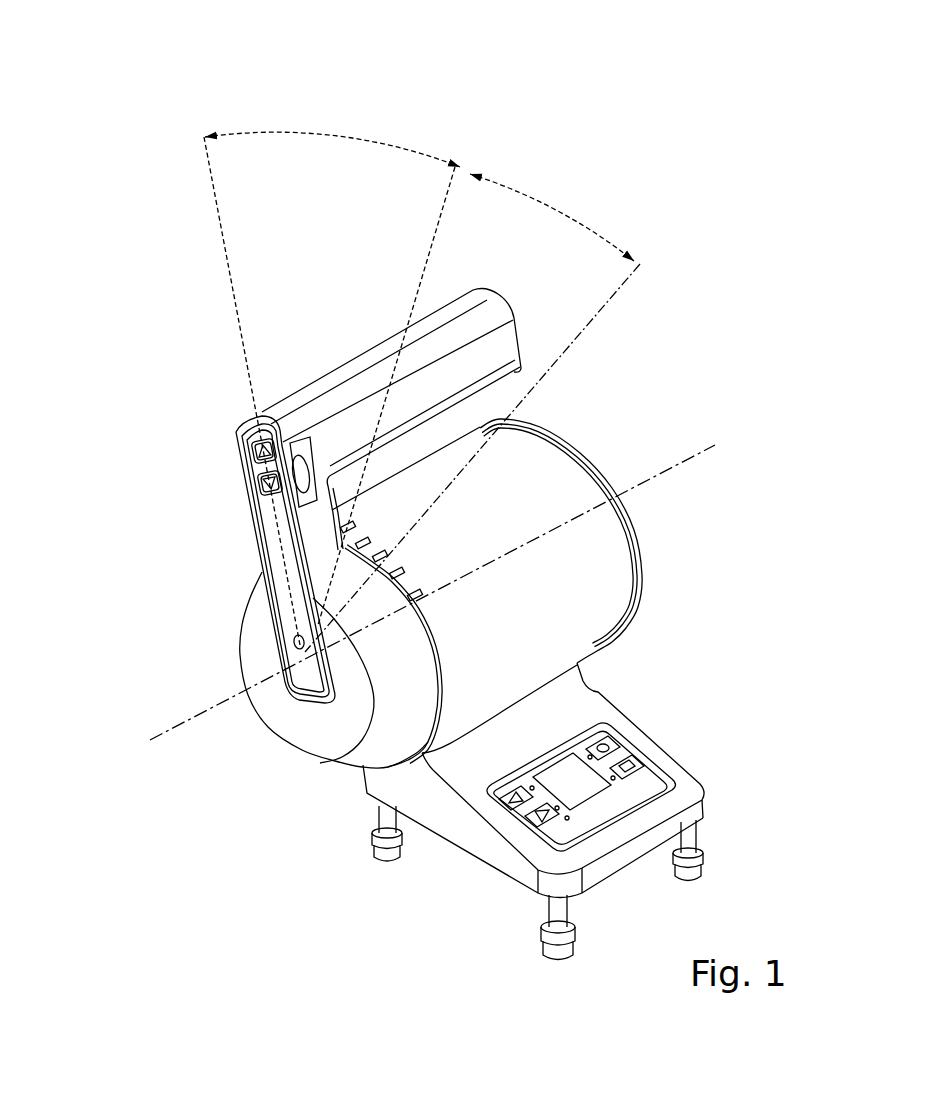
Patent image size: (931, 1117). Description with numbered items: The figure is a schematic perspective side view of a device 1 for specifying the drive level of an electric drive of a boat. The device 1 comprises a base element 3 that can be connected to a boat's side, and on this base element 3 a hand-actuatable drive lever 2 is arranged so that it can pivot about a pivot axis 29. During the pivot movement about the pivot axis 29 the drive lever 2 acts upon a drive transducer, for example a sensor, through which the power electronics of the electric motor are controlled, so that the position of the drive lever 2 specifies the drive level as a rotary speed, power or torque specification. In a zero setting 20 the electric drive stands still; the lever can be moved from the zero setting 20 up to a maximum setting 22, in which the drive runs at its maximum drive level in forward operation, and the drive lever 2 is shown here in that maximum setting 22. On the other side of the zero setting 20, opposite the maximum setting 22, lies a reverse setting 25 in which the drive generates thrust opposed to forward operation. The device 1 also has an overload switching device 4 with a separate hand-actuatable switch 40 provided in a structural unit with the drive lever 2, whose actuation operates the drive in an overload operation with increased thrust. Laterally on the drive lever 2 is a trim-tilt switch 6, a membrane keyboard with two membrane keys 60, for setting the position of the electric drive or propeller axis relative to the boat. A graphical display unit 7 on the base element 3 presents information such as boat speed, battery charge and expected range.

The device 1 is at (713, 97).
The drive lever 2 is at (502, 340).
The base element 3 is at (533, 475).
The overload switching device 4 is at (302, 437).
The trim-tilt switch 6 is at (228, 477).
The graphical display unit 7 is at (612, 775).
The zero setting 20 is at (450, 213).
The maximum setting 22 is at (211, 194).
The reverse setting 25 is at (618, 298).
The pivot axis 29 is at (167, 728).
The switch 40 is at (258, 423).
The membrane keys 60 is at (246, 462).